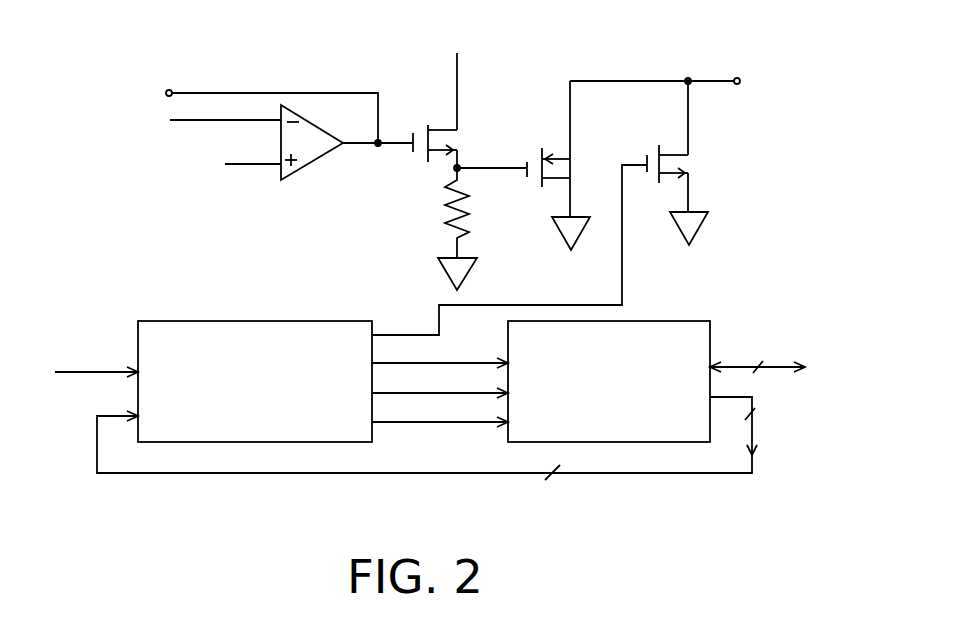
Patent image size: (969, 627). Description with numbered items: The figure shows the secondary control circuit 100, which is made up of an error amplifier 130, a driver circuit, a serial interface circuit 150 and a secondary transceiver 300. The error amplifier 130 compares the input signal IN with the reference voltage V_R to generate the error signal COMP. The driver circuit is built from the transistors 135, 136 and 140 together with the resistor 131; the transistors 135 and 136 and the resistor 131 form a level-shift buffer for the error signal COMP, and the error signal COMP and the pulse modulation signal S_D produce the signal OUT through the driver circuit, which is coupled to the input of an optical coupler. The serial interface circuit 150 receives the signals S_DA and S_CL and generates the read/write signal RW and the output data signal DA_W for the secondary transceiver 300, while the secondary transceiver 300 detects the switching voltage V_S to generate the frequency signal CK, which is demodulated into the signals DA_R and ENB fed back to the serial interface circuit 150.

The secondary control circuit 100 is at (427, 294).
The error amplifier 130 is at (310, 165).
The resistor 131 is at (473, 229).
The transistor 135 is at (457, 112).
The transistor 136 is at (569, 165).
The transistor 140 is at (554, 208).
The serial interface circuit 150 is at (690, 321).
The secondary transceiver 300 is at (265, 396).